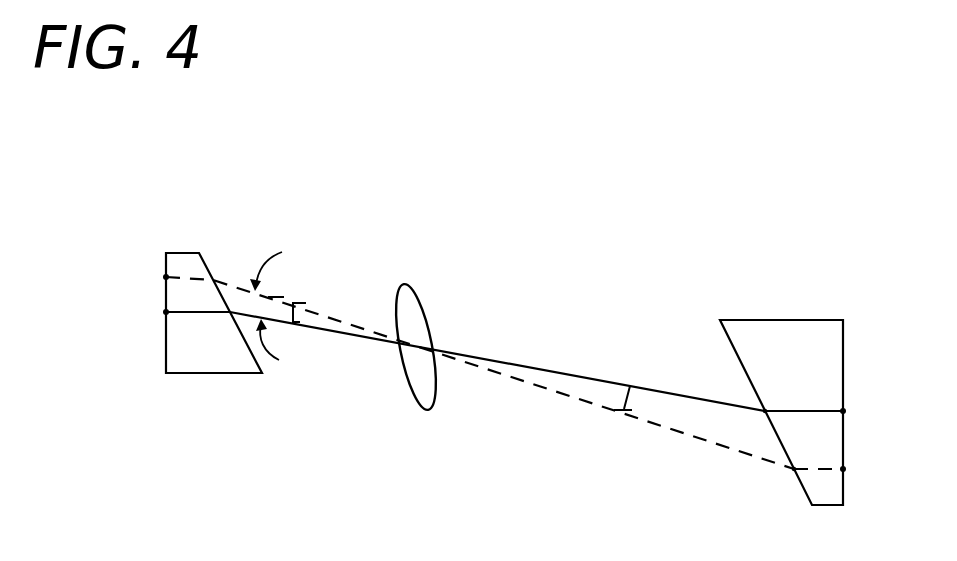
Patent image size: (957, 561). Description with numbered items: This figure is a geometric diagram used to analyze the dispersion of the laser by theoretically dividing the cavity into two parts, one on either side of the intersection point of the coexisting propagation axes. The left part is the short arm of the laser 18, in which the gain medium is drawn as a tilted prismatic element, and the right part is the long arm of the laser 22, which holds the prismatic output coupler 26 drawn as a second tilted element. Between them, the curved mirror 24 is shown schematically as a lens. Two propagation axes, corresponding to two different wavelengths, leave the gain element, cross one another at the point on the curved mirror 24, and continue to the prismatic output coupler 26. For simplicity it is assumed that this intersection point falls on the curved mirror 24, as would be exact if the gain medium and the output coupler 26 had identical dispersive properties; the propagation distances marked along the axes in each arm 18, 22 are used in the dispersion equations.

The short arm of the laser 18 is at (437, 193).
The long arm of the laser 22 is at (852, 195).
The curved mirror 24 is at (427, 307).
The prismatic output coupler 26 is at (818, 332).